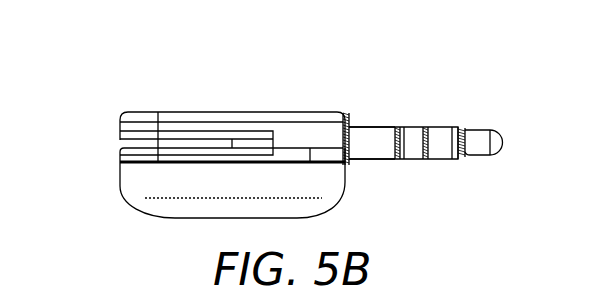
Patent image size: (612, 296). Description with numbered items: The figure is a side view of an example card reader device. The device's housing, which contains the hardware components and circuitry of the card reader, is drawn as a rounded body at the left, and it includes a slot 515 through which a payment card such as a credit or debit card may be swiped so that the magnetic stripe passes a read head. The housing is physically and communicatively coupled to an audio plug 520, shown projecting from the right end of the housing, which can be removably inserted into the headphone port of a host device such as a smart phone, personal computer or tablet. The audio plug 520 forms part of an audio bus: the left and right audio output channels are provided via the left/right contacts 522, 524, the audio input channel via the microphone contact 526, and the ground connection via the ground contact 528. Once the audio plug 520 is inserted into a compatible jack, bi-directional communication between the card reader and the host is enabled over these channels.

The slot 515 is at (120, 142).
The audio plug 520 is at (155, 68).
The left/right contact 522 is at (481, 143).
The left/right contact 524 is at (438, 134).
The microphone contact 526 is at (370, 146).
The ground contact 528 is at (413, 151).